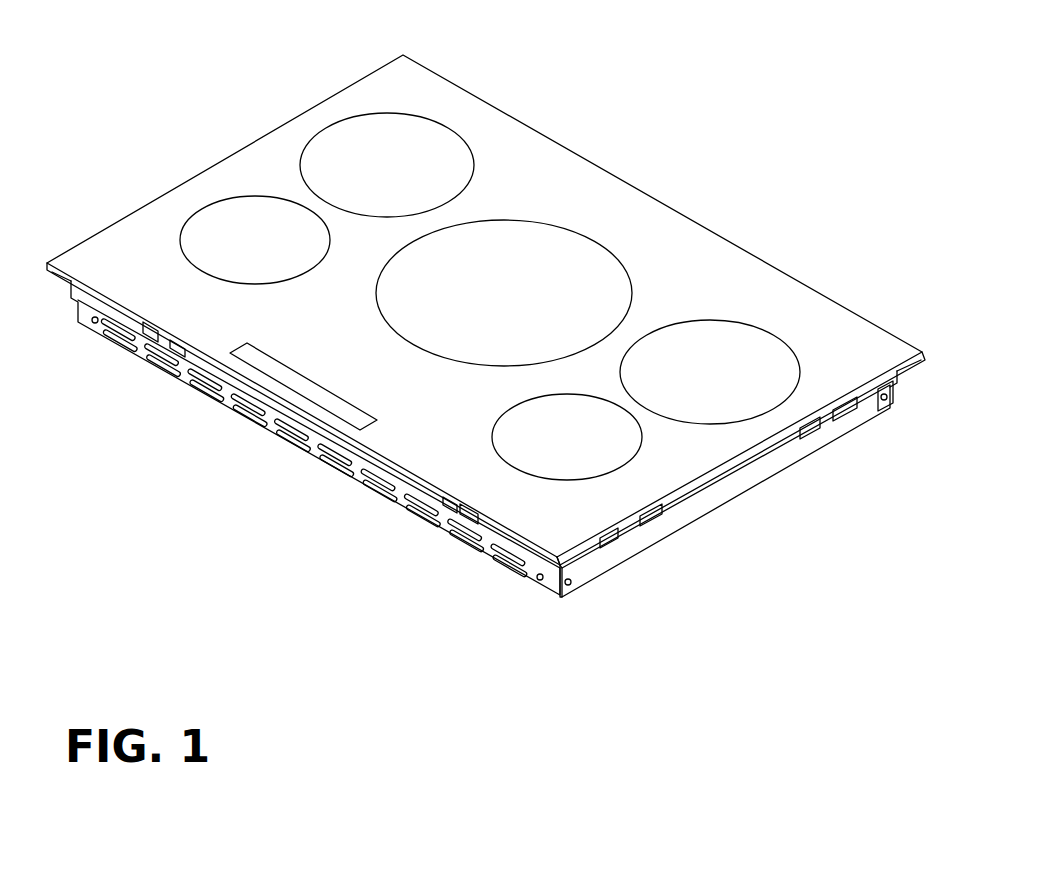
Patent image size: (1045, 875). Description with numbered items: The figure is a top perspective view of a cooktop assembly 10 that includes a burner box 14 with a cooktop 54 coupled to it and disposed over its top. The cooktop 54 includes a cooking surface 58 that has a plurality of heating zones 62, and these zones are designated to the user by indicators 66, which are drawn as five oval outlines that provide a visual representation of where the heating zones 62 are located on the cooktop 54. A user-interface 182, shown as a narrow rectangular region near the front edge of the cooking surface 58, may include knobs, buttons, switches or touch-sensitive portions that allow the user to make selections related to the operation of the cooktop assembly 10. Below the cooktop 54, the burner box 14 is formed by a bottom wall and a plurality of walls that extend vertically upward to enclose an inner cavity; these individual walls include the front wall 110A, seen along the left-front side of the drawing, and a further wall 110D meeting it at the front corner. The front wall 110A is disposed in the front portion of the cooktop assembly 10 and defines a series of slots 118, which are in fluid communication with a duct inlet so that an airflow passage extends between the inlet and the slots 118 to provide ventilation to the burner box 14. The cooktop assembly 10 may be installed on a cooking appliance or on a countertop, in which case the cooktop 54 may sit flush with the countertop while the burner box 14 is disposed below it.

The cooktop assembly 10 is at (627, 115).
The burner box 14 is at (757, 470).
The cooktop 54 is at (920, 302).
The cooking surface 58 is at (149, 274).
The heating zones 62 is at (443, 120).
The indicators 66 is at (325, 125).
The front wall 110A is at (102, 327).
The individual wall 110D is at (598, 565).
The slots 118 is at (208, 388).
The user-interface 182 is at (347, 410).